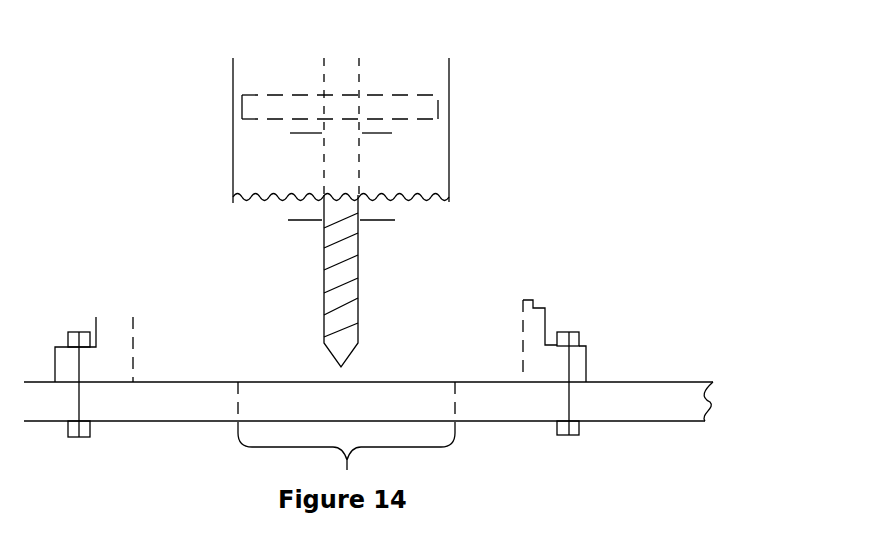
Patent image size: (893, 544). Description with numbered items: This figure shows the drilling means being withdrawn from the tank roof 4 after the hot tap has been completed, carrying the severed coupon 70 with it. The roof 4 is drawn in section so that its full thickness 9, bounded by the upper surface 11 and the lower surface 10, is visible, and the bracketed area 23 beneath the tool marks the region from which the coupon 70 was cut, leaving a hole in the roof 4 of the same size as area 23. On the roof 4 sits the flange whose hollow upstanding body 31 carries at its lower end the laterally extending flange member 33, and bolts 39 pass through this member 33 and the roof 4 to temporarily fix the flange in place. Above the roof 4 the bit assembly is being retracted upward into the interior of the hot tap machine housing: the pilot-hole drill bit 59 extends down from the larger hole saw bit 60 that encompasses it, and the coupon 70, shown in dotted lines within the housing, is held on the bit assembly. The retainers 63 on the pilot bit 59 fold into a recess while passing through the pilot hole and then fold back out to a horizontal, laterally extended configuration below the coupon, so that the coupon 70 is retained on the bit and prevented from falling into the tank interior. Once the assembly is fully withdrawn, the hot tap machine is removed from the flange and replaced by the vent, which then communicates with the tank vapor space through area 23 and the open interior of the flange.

The roof 4 is at (693, 373).
The full thickness 9 is at (400, 402).
The lower surface 10 is at (625, 421).
The upper surface 11 is at (627, 380).
The area 23 is at (347, 468).
The upstanding body 31 is at (547, 330).
The flange member 33 is at (586, 363).
The bolts 39 is at (569, 382).
The pilot-hole drill bit 59 is at (353, 337).
The hole saw bit 60 is at (425, 155).
The retainers 63 is at (308, 135).
The severed coupon 70 is at (390, 109).